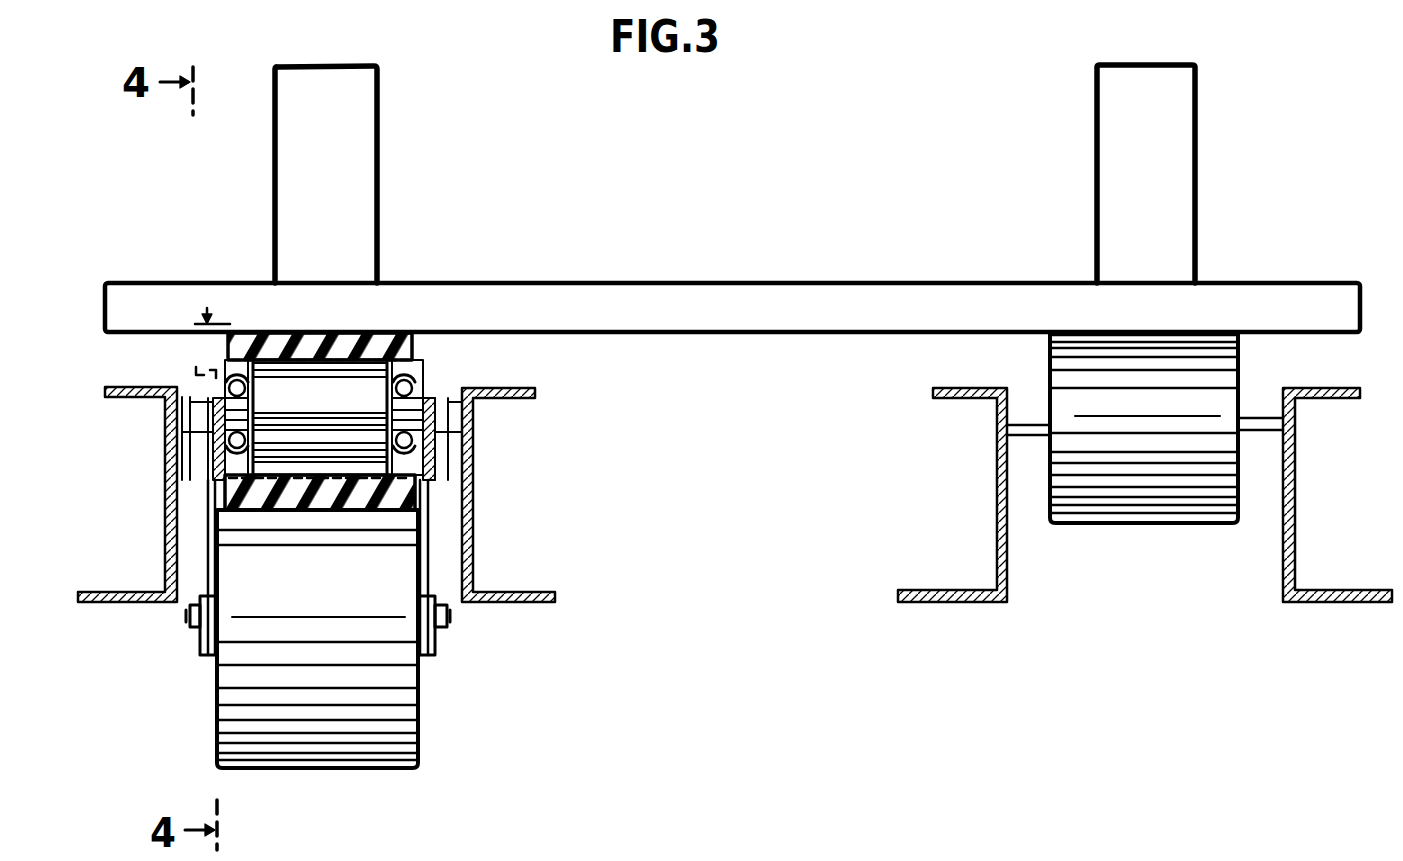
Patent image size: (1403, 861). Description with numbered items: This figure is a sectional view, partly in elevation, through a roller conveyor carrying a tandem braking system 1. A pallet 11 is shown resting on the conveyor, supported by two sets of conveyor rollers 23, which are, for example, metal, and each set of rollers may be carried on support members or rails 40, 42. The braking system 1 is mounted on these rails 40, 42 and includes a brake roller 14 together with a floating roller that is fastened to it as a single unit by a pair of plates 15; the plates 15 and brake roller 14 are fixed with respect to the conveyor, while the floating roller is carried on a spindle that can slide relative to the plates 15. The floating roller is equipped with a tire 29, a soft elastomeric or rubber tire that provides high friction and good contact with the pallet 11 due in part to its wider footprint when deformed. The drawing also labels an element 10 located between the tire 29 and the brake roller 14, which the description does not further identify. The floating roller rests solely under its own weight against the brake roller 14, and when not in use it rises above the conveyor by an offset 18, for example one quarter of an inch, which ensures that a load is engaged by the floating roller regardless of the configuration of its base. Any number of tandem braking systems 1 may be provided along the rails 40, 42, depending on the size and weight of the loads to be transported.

The tandem braking system 1 is at (658, 412).
The motor 10 is at (412, 385).
The pallet 11 is at (377, 157).
The brake roller 14 is at (420, 715).
The plates 15 is at (435, 645).
The offset 18 is at (190, 324).
The conveyor rollers 23 is at (1175, 523).
The tire 29 is at (412, 328).
The rail 40 is at (556, 592).
The rail 42 is at (120, 590).